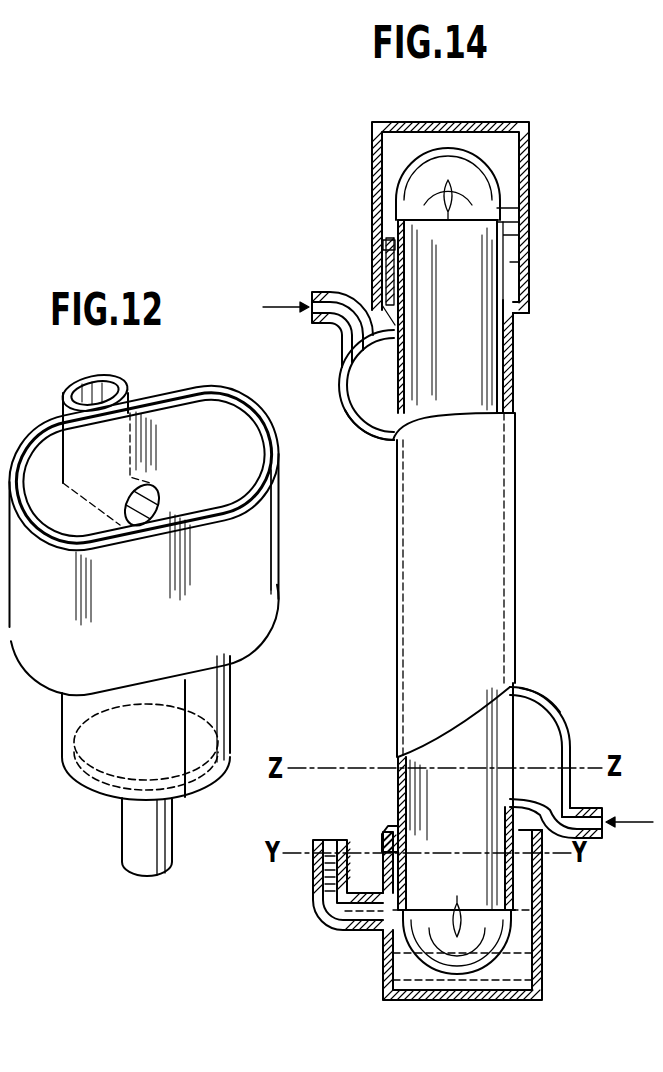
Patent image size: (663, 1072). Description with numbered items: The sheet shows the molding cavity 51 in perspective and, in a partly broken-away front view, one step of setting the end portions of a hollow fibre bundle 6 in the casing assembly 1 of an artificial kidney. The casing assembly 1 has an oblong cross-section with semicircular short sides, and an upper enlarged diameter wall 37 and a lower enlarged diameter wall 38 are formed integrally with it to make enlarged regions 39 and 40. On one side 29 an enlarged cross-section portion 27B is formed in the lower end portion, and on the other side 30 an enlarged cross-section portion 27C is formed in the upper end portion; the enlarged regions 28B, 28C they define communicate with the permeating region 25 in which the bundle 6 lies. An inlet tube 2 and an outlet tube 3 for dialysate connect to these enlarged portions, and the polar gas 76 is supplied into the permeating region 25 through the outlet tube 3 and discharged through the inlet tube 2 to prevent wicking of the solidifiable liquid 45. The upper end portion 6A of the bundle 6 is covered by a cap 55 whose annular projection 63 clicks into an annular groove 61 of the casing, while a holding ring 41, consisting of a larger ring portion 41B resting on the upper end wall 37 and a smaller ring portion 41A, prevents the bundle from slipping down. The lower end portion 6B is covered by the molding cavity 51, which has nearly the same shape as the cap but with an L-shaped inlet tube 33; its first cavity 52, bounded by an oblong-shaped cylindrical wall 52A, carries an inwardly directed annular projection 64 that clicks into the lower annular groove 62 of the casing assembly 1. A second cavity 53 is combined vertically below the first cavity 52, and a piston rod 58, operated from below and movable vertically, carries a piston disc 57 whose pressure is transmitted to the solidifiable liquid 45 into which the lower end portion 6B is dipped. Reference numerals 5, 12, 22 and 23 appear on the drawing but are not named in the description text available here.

In FIG. 14, the casing assembly 1 is at (516, 554).
In FIG. 14, the inlet tube 2 is at (604, 837).
In FIG. 14, the outlet tube 3 is at (312, 292).
In FIG. 14, the inner tube 5 is at (494, 360).
In FIG. 14, the bundle 6 is at (400, 382).
In FIG. 14, the end portion 6A is at (448, 148).
In FIG. 14, the lower end portion 6B is at (457, 967).
In FIG. 14, the tube wall 12 is at (502, 207).
In FIG. 14, the outlet junction 22 is at (561, 785).
In FIG. 14, the inlet leg 23 is at (340, 352).
In FIG. 14, the permeating region 25 is at (498, 513).
In FIG. 14, the enlarged cross-section portion 27B is at (545, 704).
In FIG. 14, the enlarged cross-section portion 27C is at (357, 423).
In FIG. 14, the enlarged cross-section region 28B is at (548, 722).
In FIG. 14, the enlarged cross-section region 28C is at (348, 388).
In FIG. 14, the one side 29 is at (517, 477).
In FIG. 14, the other side 30 is at (395, 590).
In FIG. 12, the L-shaped inlet tube 33 is at (116, 389).
In FIG. 14, the L-shaped inlet tube 33 is at (312, 875).
In FIG. 14, the upper enlarged diameter wall 37 is at (388, 262).
In FIG. 14, the lower enlarged diameter wall 38 is at (538, 897).
In FIG. 14, the enlarged region 39 is at (517, 268).
In FIG. 14, the enlarged region 40 is at (383, 871).
In FIG. 14, the holding ring 41 is at (519, 244).
In FIG. 14, the smaller ring portion 41A is at (520, 214).
In FIG. 14, the larger ring portion 41B is at (374, 243).
In FIG. 14, the solidifiable liquid 45 is at (502, 983).
In FIG. 12, the molding cavity 51 is at (242, 634).
In FIG. 14, the molding cavity 51 is at (368, 952).
In FIG. 12, the first cavity 52 is at (274, 493).
In FIG. 12, the oblong-shaped cylindrical wall 52A is at (33, 653).
In FIG. 12, the second cavity 53 is at (218, 683).
In FIG. 14, the cap 55 is at (530, 133).
In FIG. 12, the piston disc 57 is at (207, 742).
In FIG. 12, the piston rod 58 is at (165, 840).
In FIG. 14, the annular groove 61 is at (524, 300).
In FIG. 14, the annular groove 62 is at (388, 826).
In FIG. 14, the annular projection 63 is at (533, 330).
In FIG. 12, the annular projection 64 is at (240, 412).
In FIG. 14, the annular projection 64 is at (543, 850).
In FIG. 14, the polar gas 76 is at (272, 305).